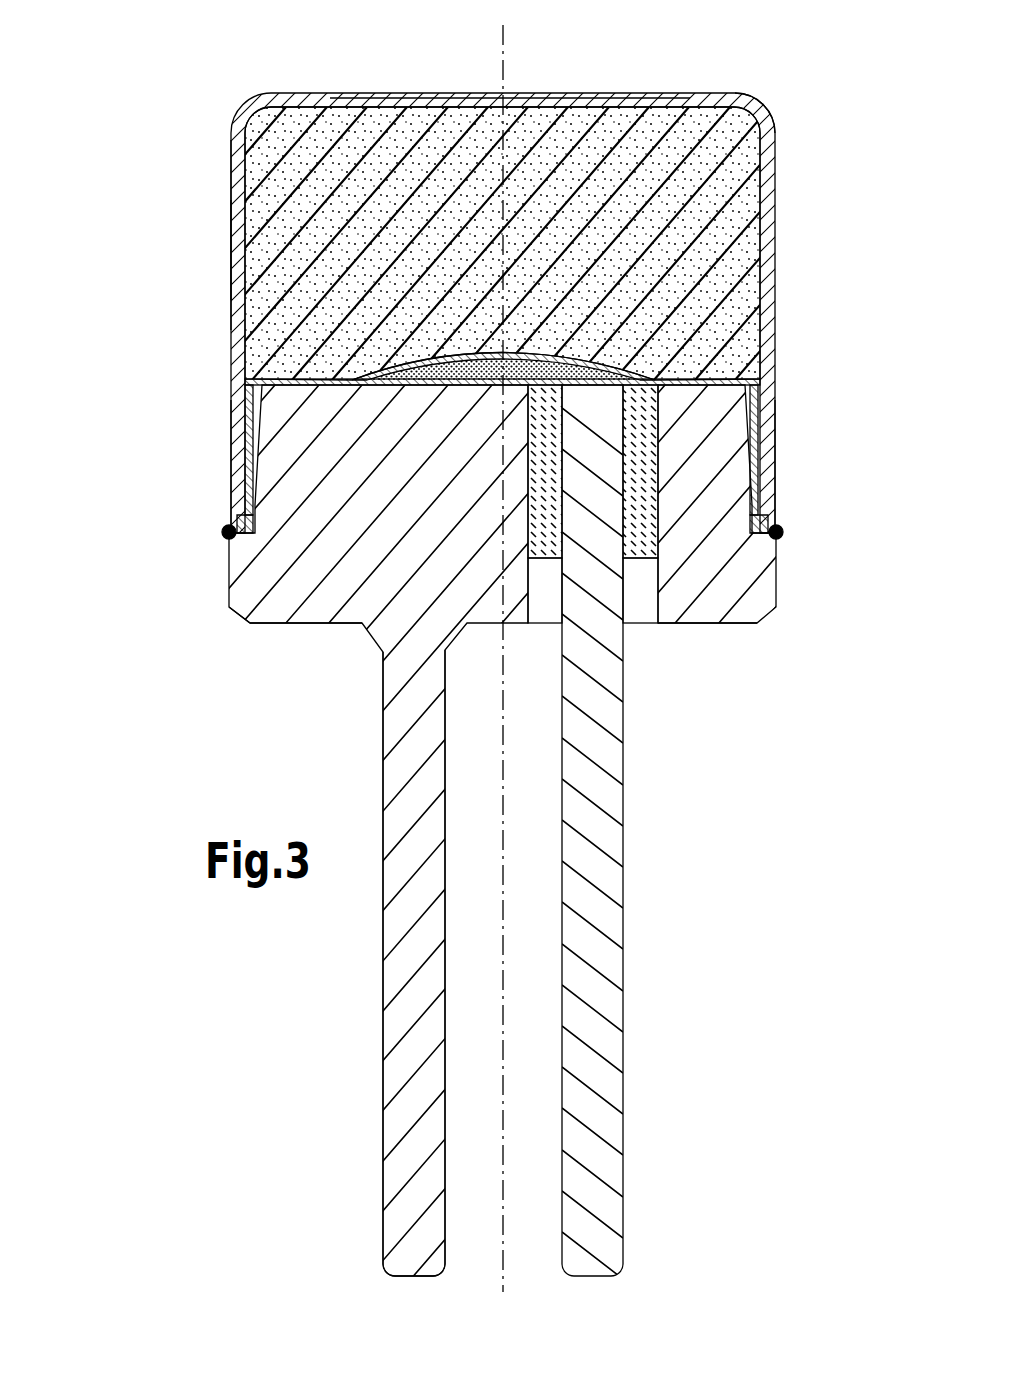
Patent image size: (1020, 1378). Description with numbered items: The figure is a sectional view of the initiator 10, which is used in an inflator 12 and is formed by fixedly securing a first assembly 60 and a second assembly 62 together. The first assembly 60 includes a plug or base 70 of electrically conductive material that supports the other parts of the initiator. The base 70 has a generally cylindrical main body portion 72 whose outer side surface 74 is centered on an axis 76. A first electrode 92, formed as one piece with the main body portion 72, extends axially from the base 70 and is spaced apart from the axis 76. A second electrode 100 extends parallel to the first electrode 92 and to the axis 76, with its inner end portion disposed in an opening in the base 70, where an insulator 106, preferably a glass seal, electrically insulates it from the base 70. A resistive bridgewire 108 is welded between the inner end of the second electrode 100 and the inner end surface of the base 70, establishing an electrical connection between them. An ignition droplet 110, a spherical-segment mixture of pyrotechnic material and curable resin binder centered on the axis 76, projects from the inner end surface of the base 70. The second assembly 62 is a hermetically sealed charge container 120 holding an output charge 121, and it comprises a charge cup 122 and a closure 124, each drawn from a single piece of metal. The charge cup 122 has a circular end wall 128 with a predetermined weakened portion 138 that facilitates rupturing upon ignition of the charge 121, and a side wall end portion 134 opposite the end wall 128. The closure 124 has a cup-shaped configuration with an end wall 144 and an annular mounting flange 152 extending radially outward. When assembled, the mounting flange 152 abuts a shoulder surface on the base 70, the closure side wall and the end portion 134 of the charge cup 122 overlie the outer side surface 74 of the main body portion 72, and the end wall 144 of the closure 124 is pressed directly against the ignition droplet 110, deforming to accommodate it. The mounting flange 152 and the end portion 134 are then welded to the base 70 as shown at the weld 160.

The initiator 10 is at (128, 553).
The inflator 12 is at (138, 498).
The first assembly 60 is at (218, 678).
The second assembly 62 is at (128, 267).
The base 70 is at (684, 632).
The main body portion 72 is at (688, 498).
The outer side surface 74 is at (758, 423).
The axis 76 is at (502, 53).
The first electrode 92 is at (404, 1033).
The second electrode 100 is at (592, 1027).
The insulator 106 is at (637, 417).
The bridgewire 108 is at (522, 388).
The ignition droplet 110 is at (432, 382).
The charge container 120 is at (222, 293).
The output charge 121 is at (282, 187).
The charge cup 122 is at (228, 150).
The closure 124 is at (226, 450).
The end wall 128 is at (706, 92).
The end portion 134 is at (773, 478).
The weakened portion 138 is at (502, 96).
The end wall 144 is at (575, 352).
The mounting flange 152 is at (758, 538).
The weld 160 is at (782, 530).